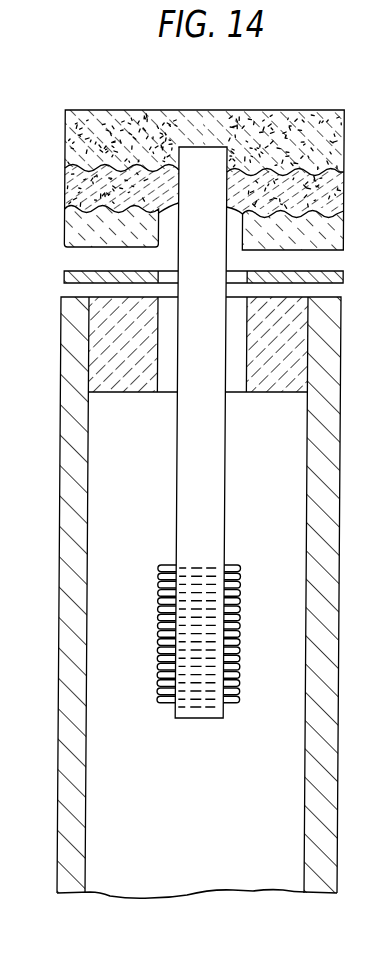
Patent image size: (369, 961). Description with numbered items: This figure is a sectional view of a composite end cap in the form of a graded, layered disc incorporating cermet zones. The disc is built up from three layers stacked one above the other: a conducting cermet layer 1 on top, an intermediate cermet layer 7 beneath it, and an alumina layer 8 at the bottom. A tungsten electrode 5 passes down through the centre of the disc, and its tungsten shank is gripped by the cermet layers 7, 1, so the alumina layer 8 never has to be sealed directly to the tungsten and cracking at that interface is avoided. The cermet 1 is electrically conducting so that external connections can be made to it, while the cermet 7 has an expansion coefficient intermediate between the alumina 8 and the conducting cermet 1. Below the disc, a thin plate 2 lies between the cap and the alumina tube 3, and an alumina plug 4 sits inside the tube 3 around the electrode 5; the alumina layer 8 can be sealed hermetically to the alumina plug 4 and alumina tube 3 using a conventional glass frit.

The conducting cermet layer 1 is at (80, 134).
The intermediate cermet layer 7 is at (70, 181).
The alumina layer 8 is at (70, 225).
The plate 2 is at (63, 277).
The alumina tube 3 is at (68, 349).
The alumina plug 4 is at (133, 393).
The tungsten electrode 5 is at (188, 488).